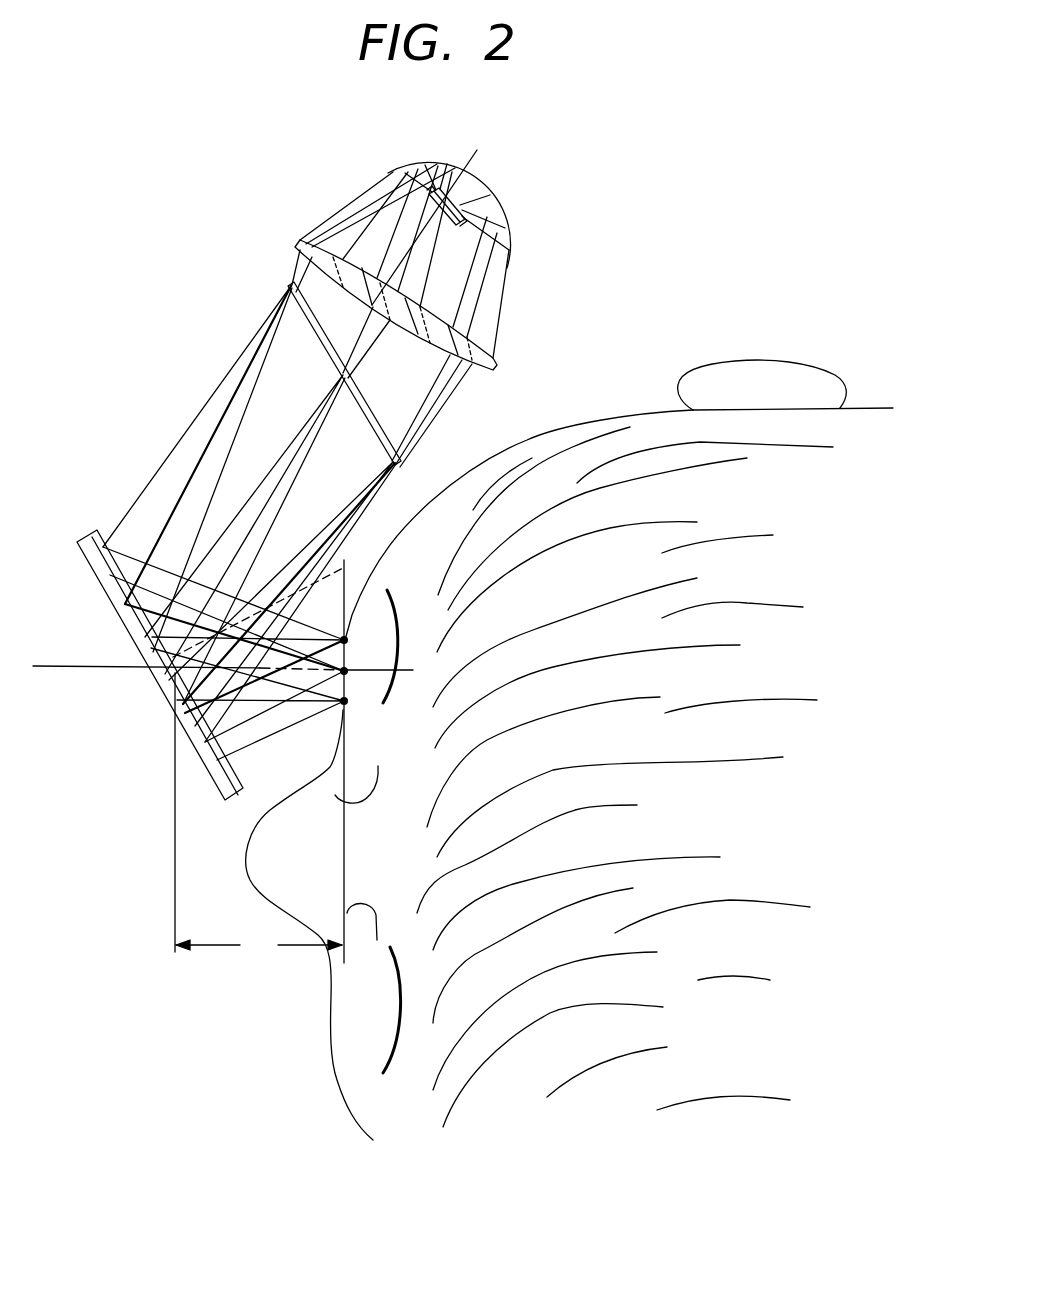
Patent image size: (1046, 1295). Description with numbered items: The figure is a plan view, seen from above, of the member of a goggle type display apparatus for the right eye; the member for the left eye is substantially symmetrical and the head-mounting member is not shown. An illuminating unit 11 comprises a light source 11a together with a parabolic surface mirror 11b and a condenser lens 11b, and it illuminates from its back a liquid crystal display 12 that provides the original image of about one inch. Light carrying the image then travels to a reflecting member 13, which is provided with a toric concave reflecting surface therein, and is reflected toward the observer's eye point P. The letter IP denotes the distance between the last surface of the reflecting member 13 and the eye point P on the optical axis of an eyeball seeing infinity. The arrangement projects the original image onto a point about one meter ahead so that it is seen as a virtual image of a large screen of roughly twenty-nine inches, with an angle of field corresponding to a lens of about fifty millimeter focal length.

The illuminating unit 11 is at (372, 147).
The light source 11a is at (458, 191).
The parabolic surface mirror and condenser lens 11b is at (510, 242).
The liquid crystal display 12 is at (378, 418).
The reflecting member 13 is at (80, 537).
The observer's eye point P is at (350, 677).
The distance between the last surface of the reflecting member and the eye point IP is at (259, 948).